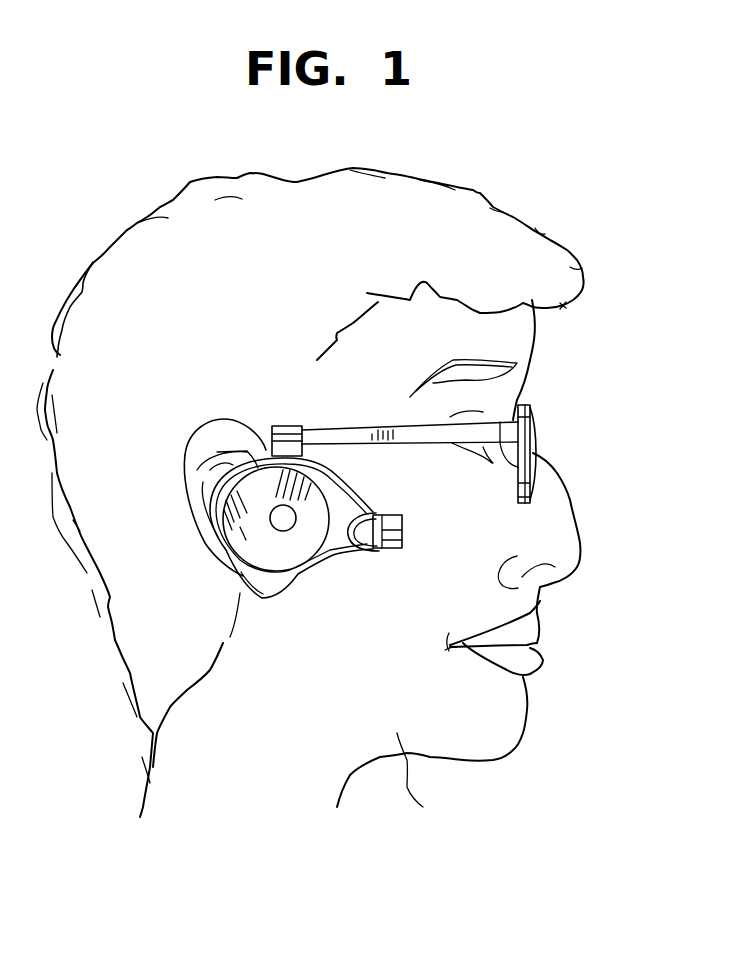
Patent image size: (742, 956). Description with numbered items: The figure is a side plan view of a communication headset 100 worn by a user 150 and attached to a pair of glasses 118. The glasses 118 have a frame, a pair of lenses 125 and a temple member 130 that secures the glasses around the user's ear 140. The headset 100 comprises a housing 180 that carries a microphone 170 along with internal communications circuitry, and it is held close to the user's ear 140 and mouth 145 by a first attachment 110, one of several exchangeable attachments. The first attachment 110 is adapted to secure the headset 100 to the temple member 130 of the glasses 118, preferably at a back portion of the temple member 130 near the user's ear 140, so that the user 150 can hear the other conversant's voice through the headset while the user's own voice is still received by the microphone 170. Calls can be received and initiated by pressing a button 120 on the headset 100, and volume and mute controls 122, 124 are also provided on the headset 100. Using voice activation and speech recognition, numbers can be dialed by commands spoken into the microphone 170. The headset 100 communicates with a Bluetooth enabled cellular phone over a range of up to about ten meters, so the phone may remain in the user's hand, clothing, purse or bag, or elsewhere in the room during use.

The communication headset 100 is at (392, 501).
The first attachment 110 is at (277, 427).
The glasses 118 is at (534, 413).
The button 120 is at (283, 520).
The volume control 122 is at (333, 450).
The mute control 124 is at (217, 465).
The lenses 125 is at (537, 453).
The temple member 130 is at (410, 443).
The user's ear 140 is at (208, 426).
The user's mouth 145 is at (533, 652).
The user 150 is at (423, 807).
The microphone 170 is at (397, 551).
The housing 180 is at (233, 562).